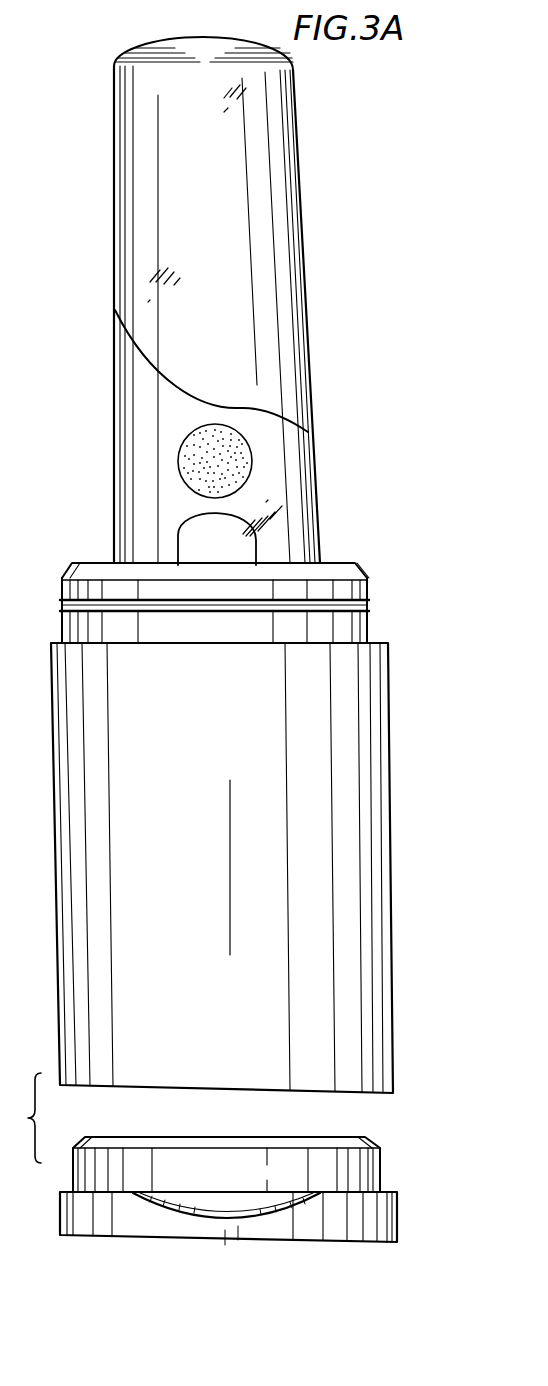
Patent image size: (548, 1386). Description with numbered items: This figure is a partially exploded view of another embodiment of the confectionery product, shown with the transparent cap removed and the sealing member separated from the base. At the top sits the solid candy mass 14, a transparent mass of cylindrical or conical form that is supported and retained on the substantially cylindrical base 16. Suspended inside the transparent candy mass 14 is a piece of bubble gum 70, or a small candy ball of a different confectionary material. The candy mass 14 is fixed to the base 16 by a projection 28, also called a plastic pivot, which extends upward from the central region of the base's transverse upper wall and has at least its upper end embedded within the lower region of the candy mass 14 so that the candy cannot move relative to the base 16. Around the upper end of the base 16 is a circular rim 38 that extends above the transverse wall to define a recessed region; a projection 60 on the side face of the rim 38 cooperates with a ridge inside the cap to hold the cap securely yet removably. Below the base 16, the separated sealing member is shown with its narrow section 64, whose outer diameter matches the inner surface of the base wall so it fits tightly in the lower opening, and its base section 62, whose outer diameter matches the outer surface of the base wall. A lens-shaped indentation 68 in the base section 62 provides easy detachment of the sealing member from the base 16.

The solid candy mass 14 is at (293, 463).
The piece of bubble gum 70 is at (240, 445).
The projection 28 is at (240, 543).
The projection on rim 60 is at (370, 607).
The circular rim 38 is at (368, 640).
The base 16 is at (222, 859).
The narrow section 64 is at (375, 1172).
The base section 62 is at (380, 1222).
The lens-shaped indentation 68 is at (245, 1213).